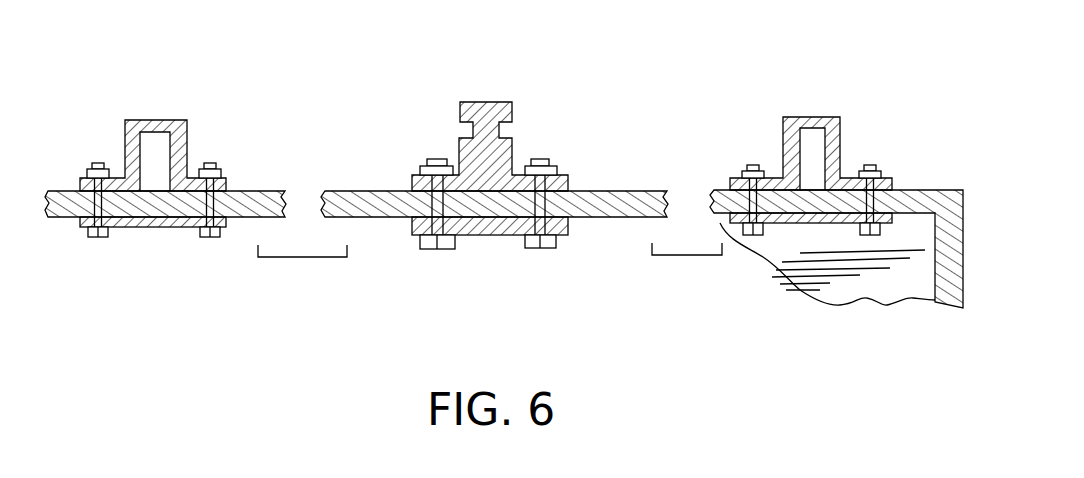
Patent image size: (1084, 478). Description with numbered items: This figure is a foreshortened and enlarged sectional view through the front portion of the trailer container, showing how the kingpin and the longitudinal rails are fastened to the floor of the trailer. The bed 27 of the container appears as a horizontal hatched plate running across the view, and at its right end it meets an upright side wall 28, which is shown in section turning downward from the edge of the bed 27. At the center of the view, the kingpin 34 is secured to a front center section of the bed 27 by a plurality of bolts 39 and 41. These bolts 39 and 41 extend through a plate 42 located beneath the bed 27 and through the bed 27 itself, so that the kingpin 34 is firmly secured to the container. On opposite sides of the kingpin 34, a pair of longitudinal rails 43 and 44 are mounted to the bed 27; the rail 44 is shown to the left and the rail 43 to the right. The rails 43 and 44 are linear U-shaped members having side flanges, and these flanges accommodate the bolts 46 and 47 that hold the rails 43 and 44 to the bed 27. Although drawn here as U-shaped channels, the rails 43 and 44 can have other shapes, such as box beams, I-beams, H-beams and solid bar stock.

The bed 27 is at (627, 197).
The upright side wall 28 is at (950, 284).
The kingpin 34 is at (494, 102).
The bolt 39 is at (418, 176).
The bolt 41 is at (542, 160).
The plate 42 is at (480, 236).
The longitudinal rail 43 is at (808, 118).
The longitudinal rail 44 is at (155, 120).
The bolt 46 is at (211, 163).
The bolt 47 is at (868, 165).